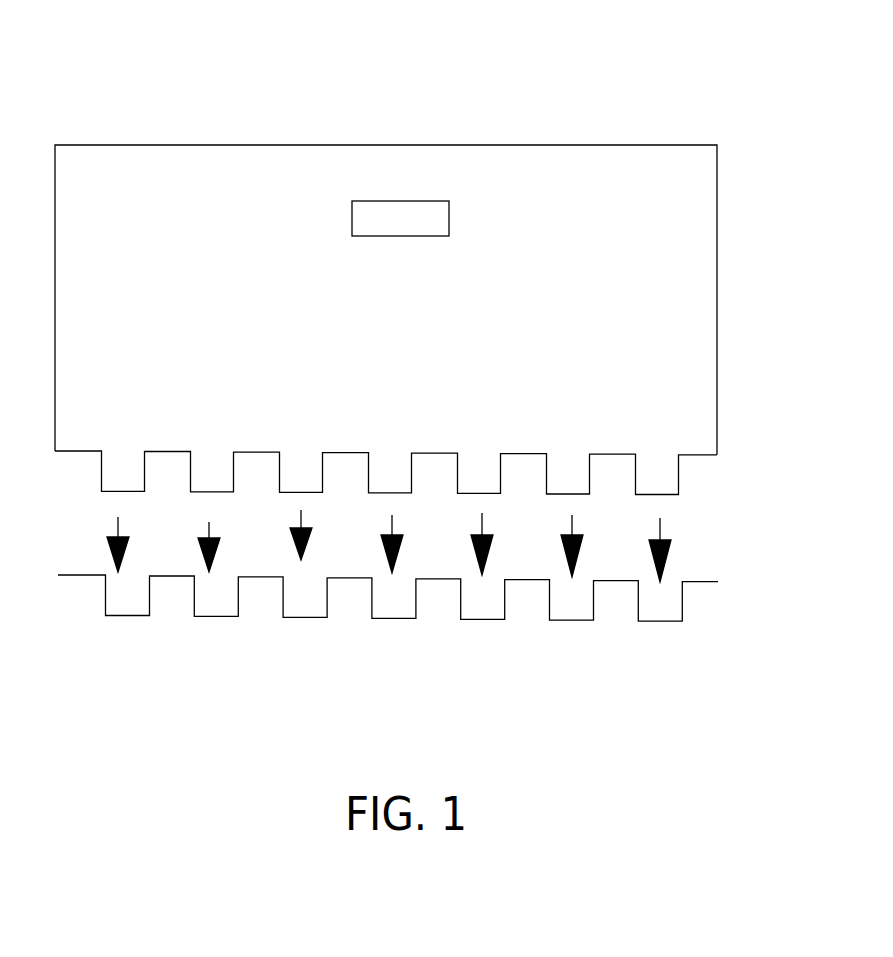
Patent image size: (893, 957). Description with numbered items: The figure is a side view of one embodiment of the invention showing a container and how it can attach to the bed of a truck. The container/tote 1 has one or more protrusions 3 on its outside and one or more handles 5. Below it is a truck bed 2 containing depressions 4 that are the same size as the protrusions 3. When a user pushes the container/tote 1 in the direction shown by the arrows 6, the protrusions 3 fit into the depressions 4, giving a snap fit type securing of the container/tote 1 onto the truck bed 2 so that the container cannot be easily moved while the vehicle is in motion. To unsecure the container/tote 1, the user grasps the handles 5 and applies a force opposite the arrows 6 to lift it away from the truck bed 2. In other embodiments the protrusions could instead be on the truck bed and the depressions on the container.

The container/tote 1 is at (386, 247).
The truck bed 2 is at (388, 662).
The protrusions 3 is at (125, 462).
The depressions 4 is at (221, 595).
The handles 5 is at (423, 220).
The arrows 6 is at (660, 518).